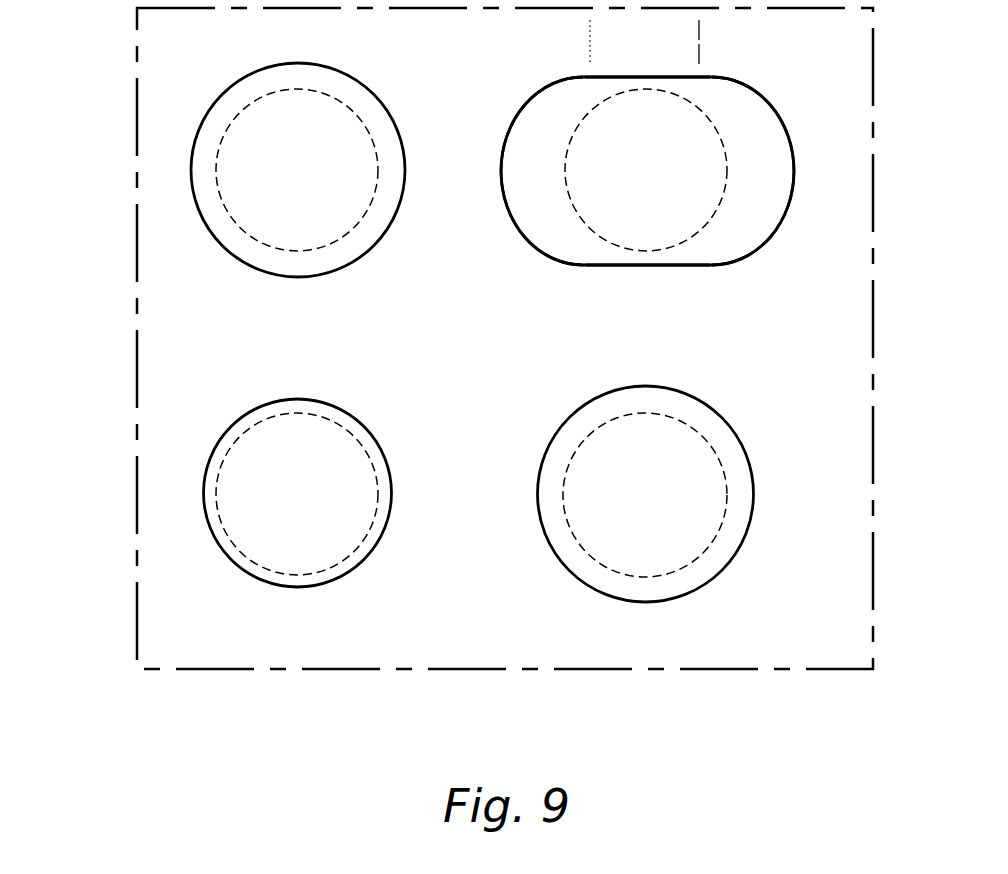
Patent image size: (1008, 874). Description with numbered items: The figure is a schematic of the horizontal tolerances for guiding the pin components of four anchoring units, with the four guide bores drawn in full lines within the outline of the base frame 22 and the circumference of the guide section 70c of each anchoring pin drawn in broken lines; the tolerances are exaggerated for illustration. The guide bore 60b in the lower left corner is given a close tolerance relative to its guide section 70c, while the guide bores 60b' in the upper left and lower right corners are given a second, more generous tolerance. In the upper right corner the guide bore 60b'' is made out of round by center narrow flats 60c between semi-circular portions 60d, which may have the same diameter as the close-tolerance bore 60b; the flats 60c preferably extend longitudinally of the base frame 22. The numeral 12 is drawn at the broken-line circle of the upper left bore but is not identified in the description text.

The base frame 22 is at (133, 340).
The electrical contact pad 12 is at (279, 249).
The guide bore 60b is at (286, 513).
The guide section bore 60b' is at (462, 323).
The guide section bore 60b'' is at (664, 142).
The narrow flats 60c is at (643, 77).
The semi-circular portions 60d is at (545, 88).
The guide section 70c is at (703, 227).